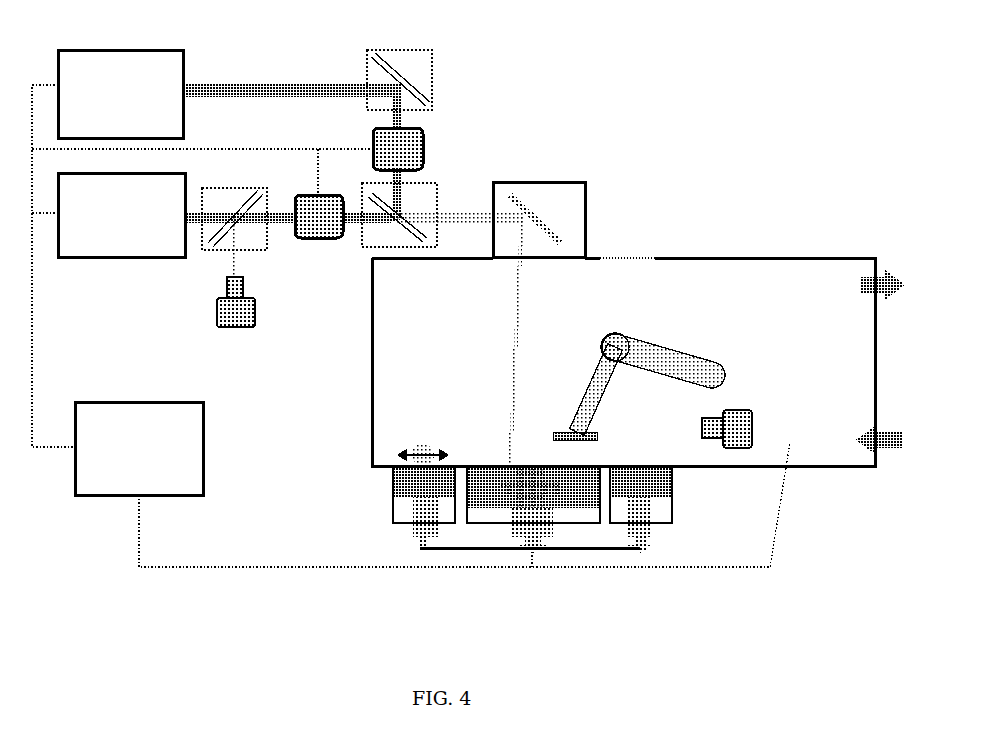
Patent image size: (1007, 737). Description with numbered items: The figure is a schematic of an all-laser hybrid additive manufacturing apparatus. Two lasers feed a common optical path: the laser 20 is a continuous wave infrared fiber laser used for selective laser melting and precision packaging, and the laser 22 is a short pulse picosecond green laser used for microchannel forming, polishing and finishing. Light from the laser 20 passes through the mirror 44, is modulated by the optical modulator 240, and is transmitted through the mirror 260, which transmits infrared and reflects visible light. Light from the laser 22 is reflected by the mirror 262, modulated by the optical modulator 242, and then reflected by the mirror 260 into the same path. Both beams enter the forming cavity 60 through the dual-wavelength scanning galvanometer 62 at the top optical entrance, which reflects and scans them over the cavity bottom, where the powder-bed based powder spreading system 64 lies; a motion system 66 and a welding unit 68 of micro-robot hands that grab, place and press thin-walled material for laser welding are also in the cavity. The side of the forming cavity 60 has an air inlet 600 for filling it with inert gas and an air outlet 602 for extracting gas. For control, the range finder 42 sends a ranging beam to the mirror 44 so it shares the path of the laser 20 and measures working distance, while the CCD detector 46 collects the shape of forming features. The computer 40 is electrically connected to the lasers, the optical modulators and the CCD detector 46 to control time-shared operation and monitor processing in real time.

The laser 20 is at (121, 215).
The laser 22 is at (120, 94).
The computer 40 is at (139, 448).
The range finder 42 is at (232, 328).
The mirror 44 is at (253, 192).
The CCD detector 46 is at (752, 430).
The forming cavity 60 is at (735, 258).
The scanning galvanometer 62 is at (522, 198).
The powder spreading system 64 is at (418, 443).
The motion system 66 is at (420, 548).
The welding unit 68 is at (653, 337).
The optical modulator 240 is at (310, 240).
The optical modulator 242 is at (425, 135).
The mirror 260 is at (415, 232).
The mirror 262 is at (372, 57).
The air inlet 600 is at (899, 440).
The air outlet 602 is at (904, 285).